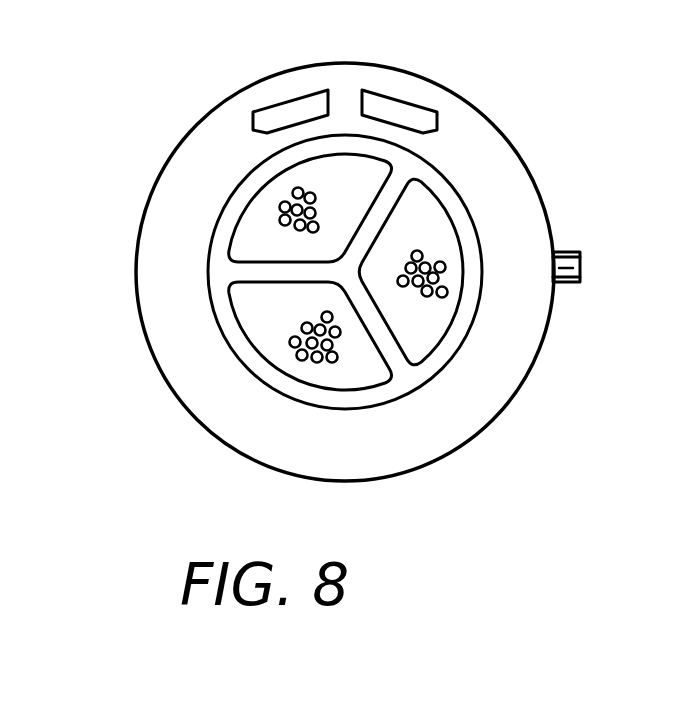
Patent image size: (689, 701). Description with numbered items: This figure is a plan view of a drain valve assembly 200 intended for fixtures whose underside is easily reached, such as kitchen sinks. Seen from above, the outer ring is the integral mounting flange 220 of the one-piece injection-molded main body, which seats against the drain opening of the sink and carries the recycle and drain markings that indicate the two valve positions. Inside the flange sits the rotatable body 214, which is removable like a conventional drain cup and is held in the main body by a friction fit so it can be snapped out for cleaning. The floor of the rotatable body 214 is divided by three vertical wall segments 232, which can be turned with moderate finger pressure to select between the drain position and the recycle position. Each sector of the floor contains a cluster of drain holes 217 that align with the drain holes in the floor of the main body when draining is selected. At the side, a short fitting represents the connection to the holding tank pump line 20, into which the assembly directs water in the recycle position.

The drain valve assembly 200 is at (100, 286).
The integral mounting flange 220 is at (202, 139).
The rotatable body 214 is at (226, 314).
The vertical wall segments 232 is at (258, 258).
The drain holes 217 is at (314, 195).
The holding tank pump line 20 is at (571, 252).